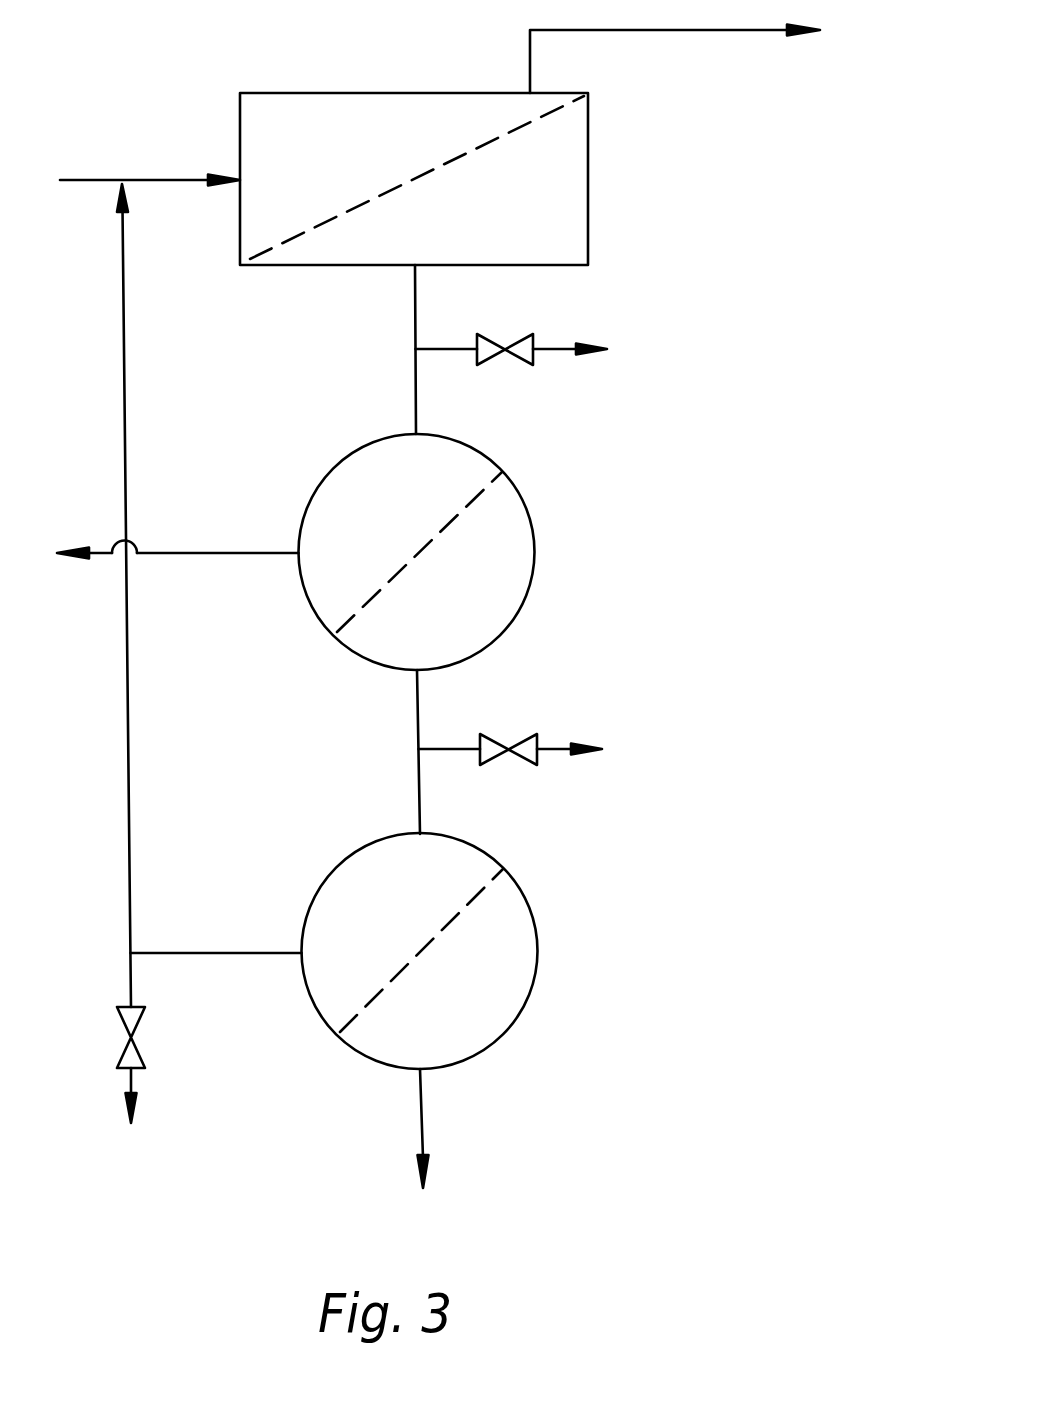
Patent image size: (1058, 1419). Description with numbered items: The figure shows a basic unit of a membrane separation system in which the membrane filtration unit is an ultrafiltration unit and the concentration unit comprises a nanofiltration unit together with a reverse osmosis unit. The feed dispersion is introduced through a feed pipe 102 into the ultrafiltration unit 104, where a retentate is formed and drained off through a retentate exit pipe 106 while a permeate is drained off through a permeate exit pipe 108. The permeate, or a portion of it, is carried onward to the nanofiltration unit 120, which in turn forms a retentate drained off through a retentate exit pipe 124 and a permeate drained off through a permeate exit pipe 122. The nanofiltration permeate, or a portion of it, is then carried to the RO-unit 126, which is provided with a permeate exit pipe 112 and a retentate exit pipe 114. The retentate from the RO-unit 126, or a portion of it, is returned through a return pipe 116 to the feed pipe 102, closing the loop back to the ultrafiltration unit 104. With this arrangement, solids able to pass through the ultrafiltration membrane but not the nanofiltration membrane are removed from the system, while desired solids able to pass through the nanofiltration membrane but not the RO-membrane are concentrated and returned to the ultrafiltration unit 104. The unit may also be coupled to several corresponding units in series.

The feed pipe 102 is at (150, 164).
The ultrafiltration unit 104 is at (315, 92).
The retentate exit pipe 106 is at (675, 46).
The permeate exit pipe 108 is at (511, 349).
The permeate exit pipe 112 is at (448, 1128).
The retentate exit pipe 114 is at (216, 935).
The return pipe 116 is at (149, 653).
The nanofiltration unit 120 is at (529, 517).
The permeate exit pipe 122 is at (509, 752).
The retentate exit pipe 124 is at (178, 536).
The RO-unit 126 is at (532, 917).